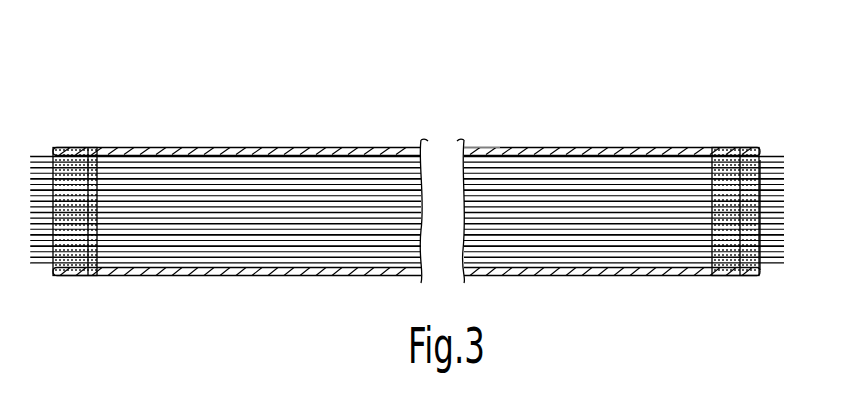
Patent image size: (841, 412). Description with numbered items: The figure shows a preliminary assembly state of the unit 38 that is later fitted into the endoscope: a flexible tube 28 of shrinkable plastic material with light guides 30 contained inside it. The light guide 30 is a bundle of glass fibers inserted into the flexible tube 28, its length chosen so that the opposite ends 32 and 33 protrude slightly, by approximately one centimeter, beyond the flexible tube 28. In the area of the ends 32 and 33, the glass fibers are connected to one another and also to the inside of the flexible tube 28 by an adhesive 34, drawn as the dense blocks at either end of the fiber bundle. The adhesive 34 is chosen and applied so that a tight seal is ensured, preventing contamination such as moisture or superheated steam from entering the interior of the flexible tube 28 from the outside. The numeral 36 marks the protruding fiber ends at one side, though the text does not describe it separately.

The flexible tube 28 is at (293, 150).
The light guide 30 is at (188, 180).
The end of glass fiber bundle 32 is at (55, 151).
The end of glass fiber bundle 33 is at (763, 157).
The adhesive 34 is at (86, 153).
The protruding fiber ends 36 is at (42, 262).
The unit 38 is at (507, 137).